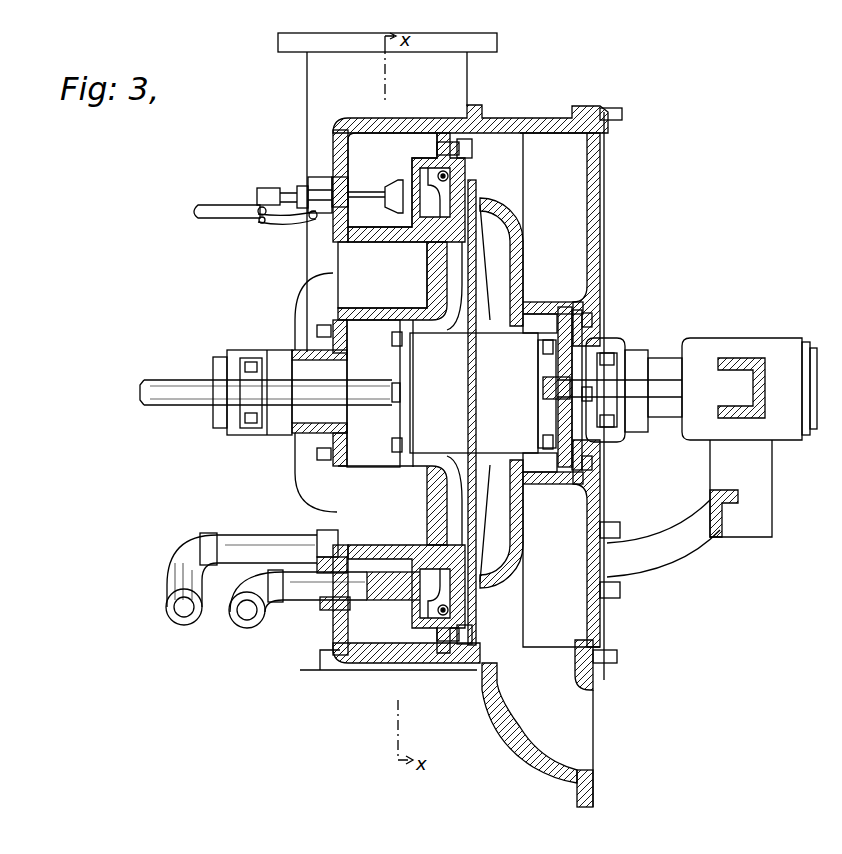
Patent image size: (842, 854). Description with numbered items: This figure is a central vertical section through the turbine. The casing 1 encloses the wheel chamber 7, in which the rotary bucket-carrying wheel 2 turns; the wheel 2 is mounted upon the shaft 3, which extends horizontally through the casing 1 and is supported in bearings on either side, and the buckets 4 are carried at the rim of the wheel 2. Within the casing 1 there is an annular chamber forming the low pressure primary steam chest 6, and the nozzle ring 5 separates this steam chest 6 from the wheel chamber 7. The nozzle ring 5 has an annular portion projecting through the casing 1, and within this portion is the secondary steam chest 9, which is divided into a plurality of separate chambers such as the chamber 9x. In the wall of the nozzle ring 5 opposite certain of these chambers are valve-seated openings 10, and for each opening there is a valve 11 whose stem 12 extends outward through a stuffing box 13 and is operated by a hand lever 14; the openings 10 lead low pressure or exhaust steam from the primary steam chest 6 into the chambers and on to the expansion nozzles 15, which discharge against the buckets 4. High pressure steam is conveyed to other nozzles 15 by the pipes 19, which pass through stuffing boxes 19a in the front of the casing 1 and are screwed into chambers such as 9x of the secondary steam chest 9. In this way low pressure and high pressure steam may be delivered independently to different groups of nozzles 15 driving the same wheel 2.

The casing 1 is at (488, 122).
The rotary bucket-carrying wheel 2 is at (492, 318).
The shaft 3 is at (178, 386).
The buckets 4 is at (476, 396).
The nozzle ring 5 is at (478, 207).
The low pressure primary steam chest 6 is at (370, 137).
The wheel chamber 7 is at (582, 180).
The secondary steam chest 9 is at (440, 203).
The chamber of the secondary steam chest 9x is at (418, 620).
The valve-seated openings 10 is at (415, 242).
The valve 11 is at (396, 182).
The valve stem 12 is at (356, 202).
The stuffing box 13 is at (318, 180).
The hand lever 14 is at (222, 218).
The expansion nozzle 15 is at (460, 178).
The pipe 19 is at (242, 540).
The stuffing box 19a is at (325, 540).